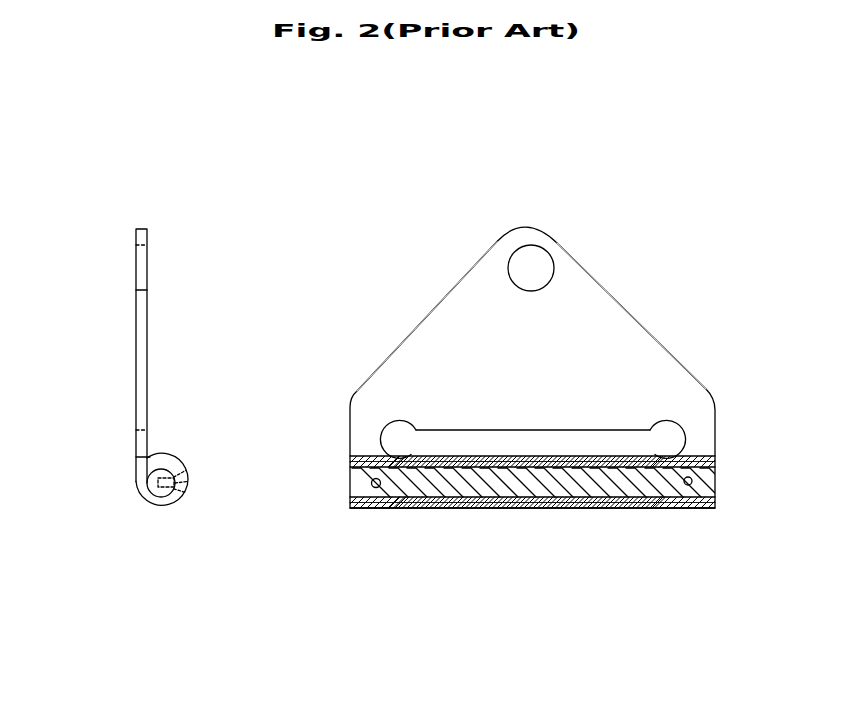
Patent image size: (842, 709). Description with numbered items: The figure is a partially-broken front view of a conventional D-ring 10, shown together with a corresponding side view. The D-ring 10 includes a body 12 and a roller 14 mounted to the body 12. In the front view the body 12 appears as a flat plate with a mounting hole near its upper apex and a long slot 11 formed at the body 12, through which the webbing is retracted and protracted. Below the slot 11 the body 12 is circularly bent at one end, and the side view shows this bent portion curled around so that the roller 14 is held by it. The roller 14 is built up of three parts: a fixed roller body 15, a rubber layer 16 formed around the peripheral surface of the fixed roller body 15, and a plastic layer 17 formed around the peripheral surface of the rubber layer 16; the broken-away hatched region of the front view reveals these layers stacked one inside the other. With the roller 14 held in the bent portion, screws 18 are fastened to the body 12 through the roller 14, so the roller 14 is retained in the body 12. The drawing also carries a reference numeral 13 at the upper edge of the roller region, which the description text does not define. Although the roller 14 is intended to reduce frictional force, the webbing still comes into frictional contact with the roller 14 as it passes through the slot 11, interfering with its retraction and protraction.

The D-ring 10 is at (172, 292).
The slot 11 is at (138, 445).
The body 12 is at (136, 322).
The upper layer 13 is at (150, 462).
The roller 14 is at (158, 494).
The fixed roller body 15 is at (583, 485).
The rubber layer 16 is at (608, 497).
The plastic layer 17 is at (638, 505).
The screws 18 is at (190, 483).